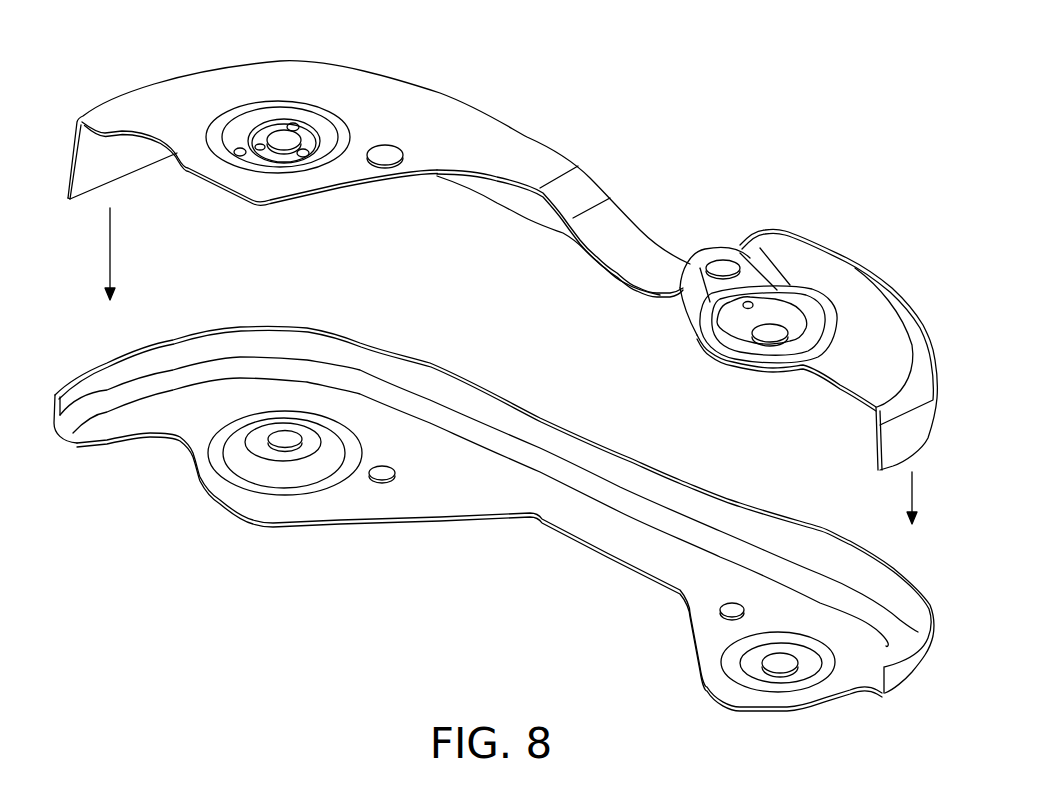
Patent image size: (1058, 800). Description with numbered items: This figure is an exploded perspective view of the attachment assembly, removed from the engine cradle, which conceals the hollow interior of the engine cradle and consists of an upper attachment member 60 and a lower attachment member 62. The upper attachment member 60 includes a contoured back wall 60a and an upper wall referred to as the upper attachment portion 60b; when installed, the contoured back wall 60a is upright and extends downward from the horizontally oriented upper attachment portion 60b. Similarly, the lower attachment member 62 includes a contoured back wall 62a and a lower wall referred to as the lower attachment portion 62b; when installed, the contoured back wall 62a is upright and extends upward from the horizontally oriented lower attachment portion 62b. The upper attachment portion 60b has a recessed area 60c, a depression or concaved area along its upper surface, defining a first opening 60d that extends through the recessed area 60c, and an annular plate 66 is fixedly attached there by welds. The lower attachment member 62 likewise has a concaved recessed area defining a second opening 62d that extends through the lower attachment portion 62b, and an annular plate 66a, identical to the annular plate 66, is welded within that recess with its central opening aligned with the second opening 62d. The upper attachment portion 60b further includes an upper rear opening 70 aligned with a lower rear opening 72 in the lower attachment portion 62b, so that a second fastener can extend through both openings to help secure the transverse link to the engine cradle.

The upper attachment member 60 is at (502, 248).
The contoured back wall 60a is at (423, 122).
The upper attachment portion 60b is at (520, 157).
The recessed area 60c is at (240, 150).
The first opening 60d is at (283, 135).
The annular plate 66 is at (313, 142).
The upper rear opening 70 is at (780, 327).
The lower attachment member 62 is at (494, 507).
The contoured back wall 62a is at (657, 490).
The lower attachment portion 62b is at (437, 476).
The second opening 62d is at (280, 437).
The annular plate 66a is at (285, 446).
The lower rear opening 72 is at (787, 666).